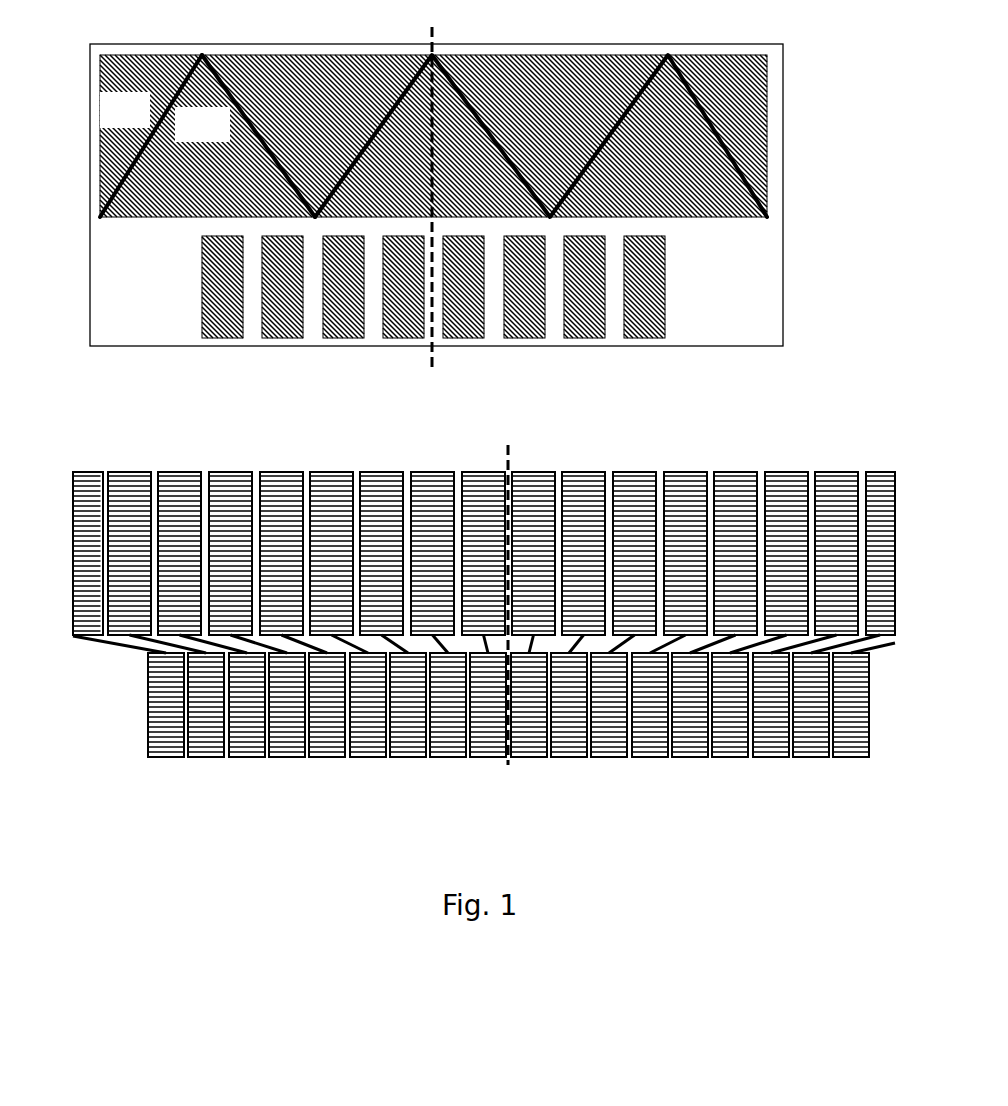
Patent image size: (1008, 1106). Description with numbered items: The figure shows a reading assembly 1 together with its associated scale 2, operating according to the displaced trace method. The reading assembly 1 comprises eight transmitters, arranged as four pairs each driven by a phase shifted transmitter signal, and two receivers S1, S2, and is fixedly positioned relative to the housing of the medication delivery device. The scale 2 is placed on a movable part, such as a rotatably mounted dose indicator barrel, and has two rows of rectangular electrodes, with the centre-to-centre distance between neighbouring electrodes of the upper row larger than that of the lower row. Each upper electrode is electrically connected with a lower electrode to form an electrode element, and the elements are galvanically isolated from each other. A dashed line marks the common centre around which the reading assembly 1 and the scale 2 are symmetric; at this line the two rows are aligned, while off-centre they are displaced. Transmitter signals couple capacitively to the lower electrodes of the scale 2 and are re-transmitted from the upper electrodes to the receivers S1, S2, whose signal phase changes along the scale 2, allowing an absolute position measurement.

The reading assembly 1 is at (476, 199).
The scale 2 is at (103, 663).
The receiver electrode S1 is at (151, 136).
The receiver electrode S2 is at (245, 136).